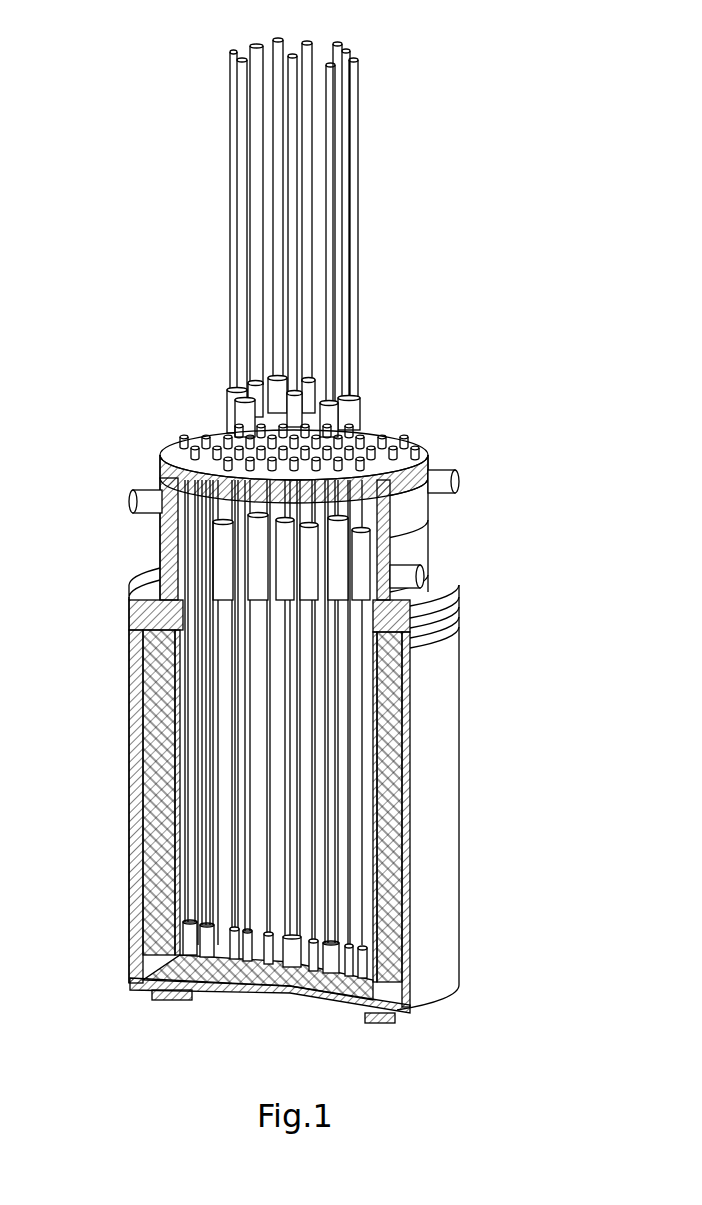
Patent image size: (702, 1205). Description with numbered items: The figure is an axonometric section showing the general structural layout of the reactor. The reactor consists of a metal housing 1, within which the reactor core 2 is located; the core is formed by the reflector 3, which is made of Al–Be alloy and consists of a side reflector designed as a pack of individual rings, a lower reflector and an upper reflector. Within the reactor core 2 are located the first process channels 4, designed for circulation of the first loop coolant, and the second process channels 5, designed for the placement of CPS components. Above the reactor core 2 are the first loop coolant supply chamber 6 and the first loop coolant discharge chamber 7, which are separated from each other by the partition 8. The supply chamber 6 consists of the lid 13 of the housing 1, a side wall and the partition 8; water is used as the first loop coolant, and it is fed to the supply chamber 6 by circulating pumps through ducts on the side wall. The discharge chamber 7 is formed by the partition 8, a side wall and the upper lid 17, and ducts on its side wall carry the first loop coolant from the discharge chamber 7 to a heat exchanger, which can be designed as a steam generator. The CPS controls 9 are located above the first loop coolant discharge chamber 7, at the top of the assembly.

The metal housing 1 is at (427, 630).
The reactor core 2 is at (253, 797).
The reflector 3 is at (395, 943).
The first process channels 4 is at (368, 843).
The second process channels 5 is at (330, 728).
The first loop coolant supply chamber 6 is at (207, 553).
The first loop coolant discharge chamber 7 is at (213, 490).
The partition 8 is at (420, 533).
The CPS controls 9 is at (357, 407).
The lid 13 is at (435, 590).
The upper lid 17 is at (427, 445).